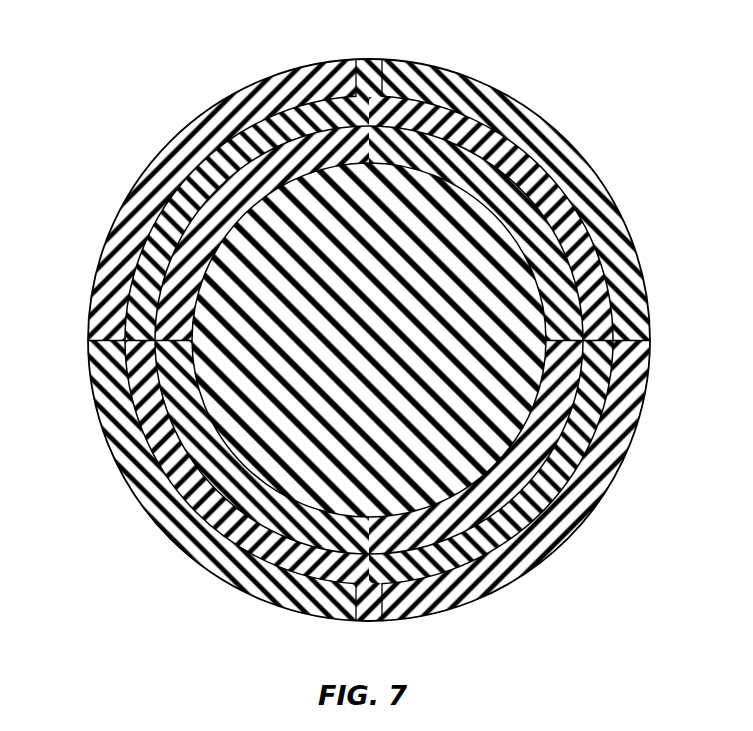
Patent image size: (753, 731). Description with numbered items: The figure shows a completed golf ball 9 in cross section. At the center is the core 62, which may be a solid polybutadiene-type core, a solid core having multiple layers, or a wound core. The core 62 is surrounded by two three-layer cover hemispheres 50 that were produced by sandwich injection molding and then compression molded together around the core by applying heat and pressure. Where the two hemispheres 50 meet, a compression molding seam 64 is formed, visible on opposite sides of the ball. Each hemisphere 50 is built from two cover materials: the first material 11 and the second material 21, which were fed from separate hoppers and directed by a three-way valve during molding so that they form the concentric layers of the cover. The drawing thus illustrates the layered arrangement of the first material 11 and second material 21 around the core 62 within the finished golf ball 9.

The golf ball 9 is at (627, 178).
The first material 11 is at (561, 411).
The second material 21 is at (573, 448).
The golf ball cover hemisphere 50 is at (530, 92).
The core 62 is at (388, 348).
The compression molding seam 64 is at (87, 345).